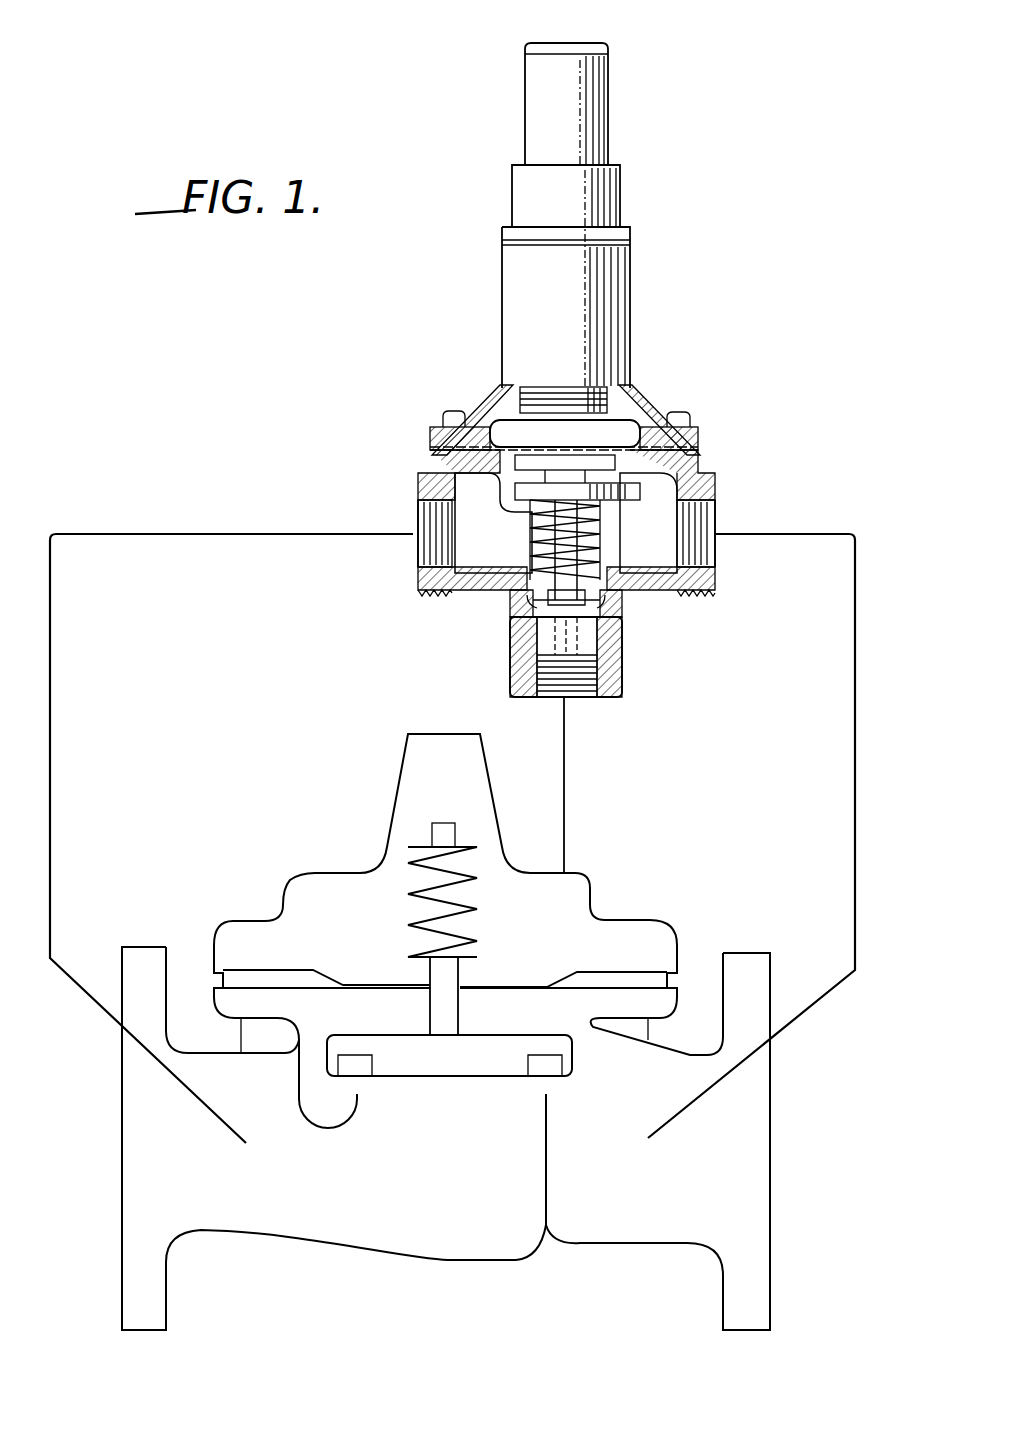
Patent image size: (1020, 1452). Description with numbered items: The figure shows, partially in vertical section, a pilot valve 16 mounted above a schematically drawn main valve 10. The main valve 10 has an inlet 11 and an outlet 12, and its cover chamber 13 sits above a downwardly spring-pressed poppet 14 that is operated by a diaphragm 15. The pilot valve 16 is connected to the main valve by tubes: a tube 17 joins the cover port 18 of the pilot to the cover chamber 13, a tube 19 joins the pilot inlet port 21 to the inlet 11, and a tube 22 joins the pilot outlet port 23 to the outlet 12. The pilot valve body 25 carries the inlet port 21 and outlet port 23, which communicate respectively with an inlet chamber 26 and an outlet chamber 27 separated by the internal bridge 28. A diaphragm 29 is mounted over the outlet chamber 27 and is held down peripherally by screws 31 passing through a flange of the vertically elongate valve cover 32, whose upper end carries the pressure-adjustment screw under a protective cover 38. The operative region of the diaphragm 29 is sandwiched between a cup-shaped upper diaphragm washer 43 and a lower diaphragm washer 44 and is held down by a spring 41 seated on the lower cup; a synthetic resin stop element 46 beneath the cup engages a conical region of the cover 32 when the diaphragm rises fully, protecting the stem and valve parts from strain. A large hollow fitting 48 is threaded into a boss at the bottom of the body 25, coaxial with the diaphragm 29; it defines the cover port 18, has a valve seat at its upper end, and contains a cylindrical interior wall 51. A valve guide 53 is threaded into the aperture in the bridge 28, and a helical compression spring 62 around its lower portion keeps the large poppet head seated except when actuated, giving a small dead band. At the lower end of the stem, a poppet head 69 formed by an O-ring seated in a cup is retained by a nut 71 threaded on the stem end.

The main valve 10 is at (681, 876).
The inlet 11 is at (124, 1163).
The outlet 12 is at (770, 1137).
The cover chamber 13 is at (340, 882).
The poppet 14 is at (462, 1078).
The diaphragm 15 is at (517, 983).
The pilot valve 16 is at (723, 289).
The tube 17 is at (566, 809).
The cover port 18 is at (586, 698).
The tube 19 is at (52, 766).
The inlet port 21 is at (563, 523).
The tube 22 is at (853, 750).
The outlet port 23 is at (718, 512).
The pilot valve body 25 is at (418, 580).
The inlet chamber 26 is at (456, 592).
The outlet chamber 27 is at (683, 592).
The bridge 28 is at (512, 511).
The diaphragm 29 is at (700, 452).
The screws 31 is at (690, 417).
The valve cover 32 is at (505, 300).
The protective cover 38 is at (610, 113).
The spring 41 is at (625, 393).
The upper diaphragm washer 43 is at (431, 432).
The lower diaphragm washer 44 is at (591, 463).
The stop element 46 is at (500, 408).
The fitting 48 is at (568, 657).
The cylindrical interior wall 51 is at (590, 645).
The valve guide 53 is at (618, 496).
The helical compression spring 62 is at (620, 548).
The poppet head 69 is at (526, 600).
The nut 71 is at (600, 600).